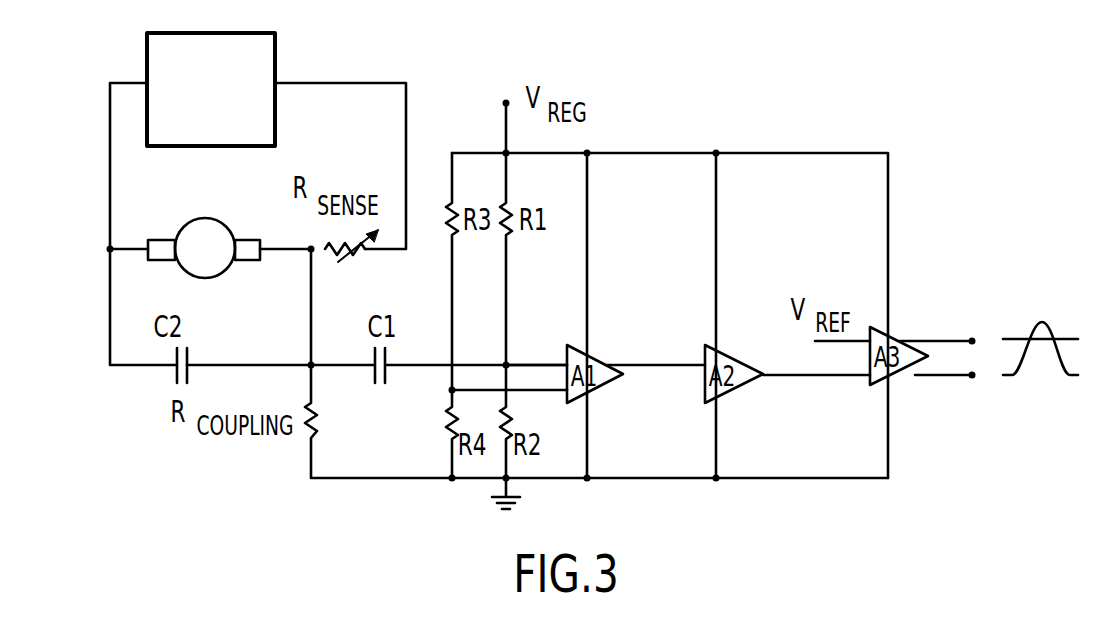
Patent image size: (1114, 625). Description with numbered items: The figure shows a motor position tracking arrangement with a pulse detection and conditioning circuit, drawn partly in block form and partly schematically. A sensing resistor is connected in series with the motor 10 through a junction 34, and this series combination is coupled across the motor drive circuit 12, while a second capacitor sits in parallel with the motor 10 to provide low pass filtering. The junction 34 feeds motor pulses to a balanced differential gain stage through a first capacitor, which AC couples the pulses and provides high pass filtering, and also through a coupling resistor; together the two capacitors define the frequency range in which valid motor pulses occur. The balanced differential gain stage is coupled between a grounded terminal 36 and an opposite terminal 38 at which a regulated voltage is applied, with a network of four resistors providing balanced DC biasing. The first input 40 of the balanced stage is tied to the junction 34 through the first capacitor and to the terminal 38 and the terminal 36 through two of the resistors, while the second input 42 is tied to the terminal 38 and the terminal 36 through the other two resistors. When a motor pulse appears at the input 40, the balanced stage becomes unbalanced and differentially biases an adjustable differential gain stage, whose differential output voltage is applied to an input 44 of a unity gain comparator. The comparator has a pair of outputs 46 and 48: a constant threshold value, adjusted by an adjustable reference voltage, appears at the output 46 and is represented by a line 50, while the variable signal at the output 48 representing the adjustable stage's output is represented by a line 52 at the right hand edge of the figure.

The motor 10 is at (203, 306).
The motor drive circuit 12 is at (206, 175).
The junction 34 is at (336, 280).
The grounded terminal 36 is at (504, 482).
The terminal 38 is at (504, 152).
The first input 40 is at (525, 363).
The second input 42 is at (552, 417).
The input 44 is at (805, 405).
The output 46 is at (972, 338).
The output 48 is at (960, 405).
The line 50 is at (1014, 337).
The line 52 is at (1001, 405).